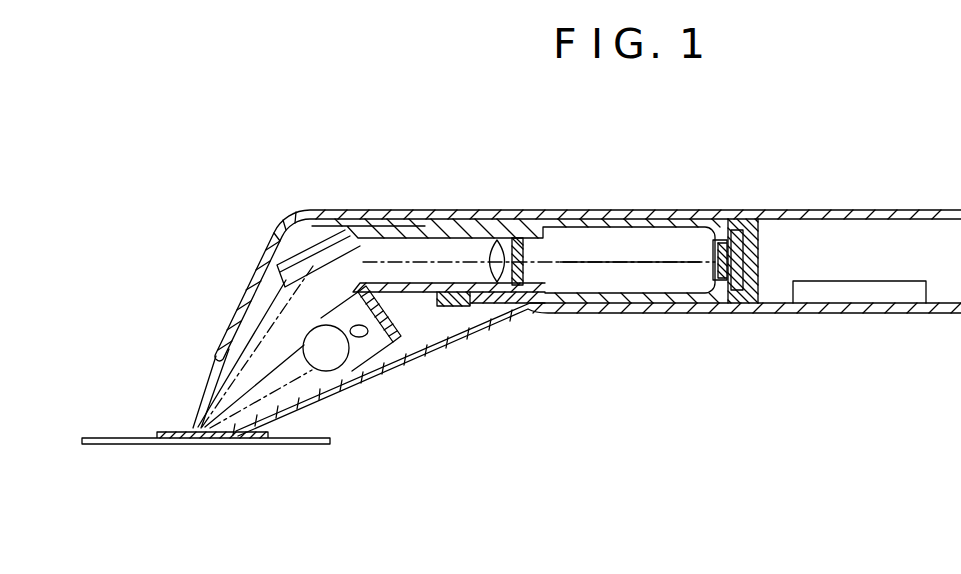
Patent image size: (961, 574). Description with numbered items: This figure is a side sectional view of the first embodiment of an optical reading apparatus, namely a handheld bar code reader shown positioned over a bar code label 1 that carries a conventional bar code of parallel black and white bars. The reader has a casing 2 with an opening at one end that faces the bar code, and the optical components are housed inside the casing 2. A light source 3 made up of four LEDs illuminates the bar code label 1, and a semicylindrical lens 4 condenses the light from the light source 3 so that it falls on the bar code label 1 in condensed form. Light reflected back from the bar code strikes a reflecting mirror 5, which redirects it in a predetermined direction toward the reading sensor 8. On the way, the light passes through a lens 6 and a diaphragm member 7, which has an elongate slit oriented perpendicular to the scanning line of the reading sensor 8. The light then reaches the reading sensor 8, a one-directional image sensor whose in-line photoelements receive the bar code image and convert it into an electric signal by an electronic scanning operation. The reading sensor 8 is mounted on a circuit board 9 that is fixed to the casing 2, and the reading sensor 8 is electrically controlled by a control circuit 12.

The bar code label 1 is at (158, 432).
The casing 2 is at (518, 211).
The light source 3 is at (372, 325).
The semicylindrical lens 4 is at (309, 356).
The reflecting mirror 5 is at (320, 265).
The lens 6 is at (488, 256).
The diaphragm member 7 is at (527, 244).
The reading sensor 8 is at (712, 270).
The circuit board 9 is at (700, 250).
The control circuit 12 is at (845, 290).